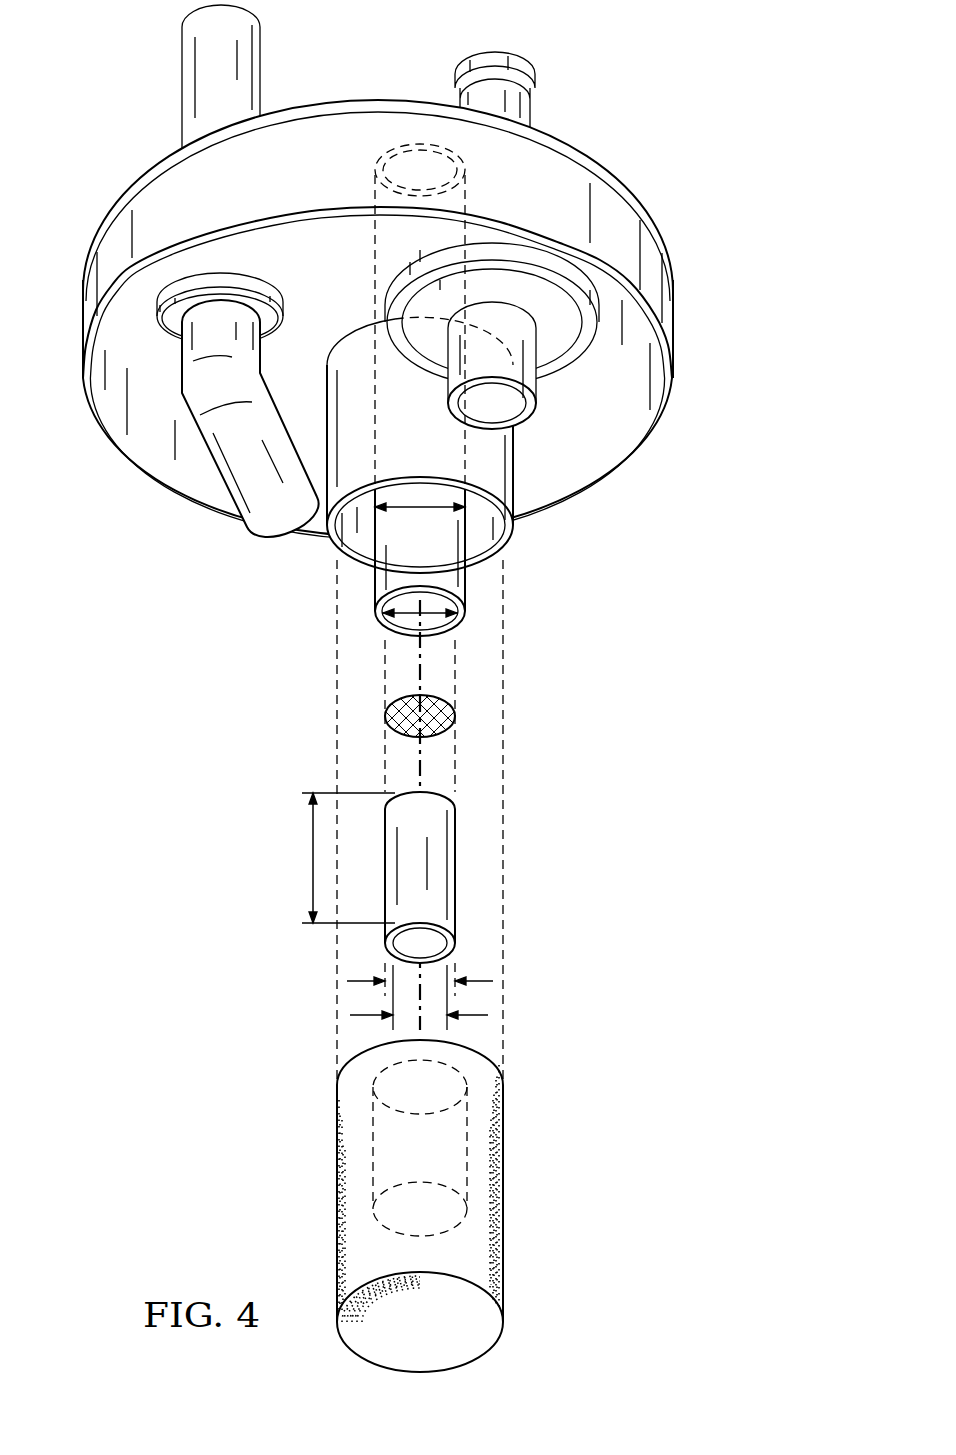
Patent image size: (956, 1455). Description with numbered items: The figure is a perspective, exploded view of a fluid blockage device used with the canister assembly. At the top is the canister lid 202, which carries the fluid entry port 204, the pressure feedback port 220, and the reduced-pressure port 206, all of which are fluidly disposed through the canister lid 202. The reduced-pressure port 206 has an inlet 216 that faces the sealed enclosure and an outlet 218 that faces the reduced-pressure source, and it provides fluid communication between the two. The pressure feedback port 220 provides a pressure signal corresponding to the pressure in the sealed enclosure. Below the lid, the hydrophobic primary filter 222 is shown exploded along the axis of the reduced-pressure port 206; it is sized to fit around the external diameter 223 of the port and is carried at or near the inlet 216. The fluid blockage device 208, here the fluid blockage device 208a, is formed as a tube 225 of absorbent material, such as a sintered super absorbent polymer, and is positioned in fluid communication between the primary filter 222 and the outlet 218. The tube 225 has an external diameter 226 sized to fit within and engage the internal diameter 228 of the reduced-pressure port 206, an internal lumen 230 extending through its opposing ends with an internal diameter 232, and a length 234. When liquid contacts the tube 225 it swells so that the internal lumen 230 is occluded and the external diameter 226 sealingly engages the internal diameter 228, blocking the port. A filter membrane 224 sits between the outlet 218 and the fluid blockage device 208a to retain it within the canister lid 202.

The canister lid 202 is at (99, 108).
The fluid entry port 204 is at (256, 548).
The reduced-pressure port 206 is at (477, 547).
The fluid blockage device 208 is at (542, 877).
The fluid blockage device 208a is at (542, 877).
The inlet 216 is at (463, 630).
The outlet 218 is at (418, 150).
The pressure feedback port 220 is at (533, 428).
The primary filter 222 is at (503, 1192).
The external diameter 223 is at (423, 510).
The filter membrane 224 is at (457, 713).
The tube 225 is at (466, 857).
The external diameter 226 is at (477, 982).
The internal diameter 228 is at (412, 617).
The internal lumen 230 is at (447, 946).
The internal diameter 232 is at (372, 1016).
The length 234 is at (315, 858).